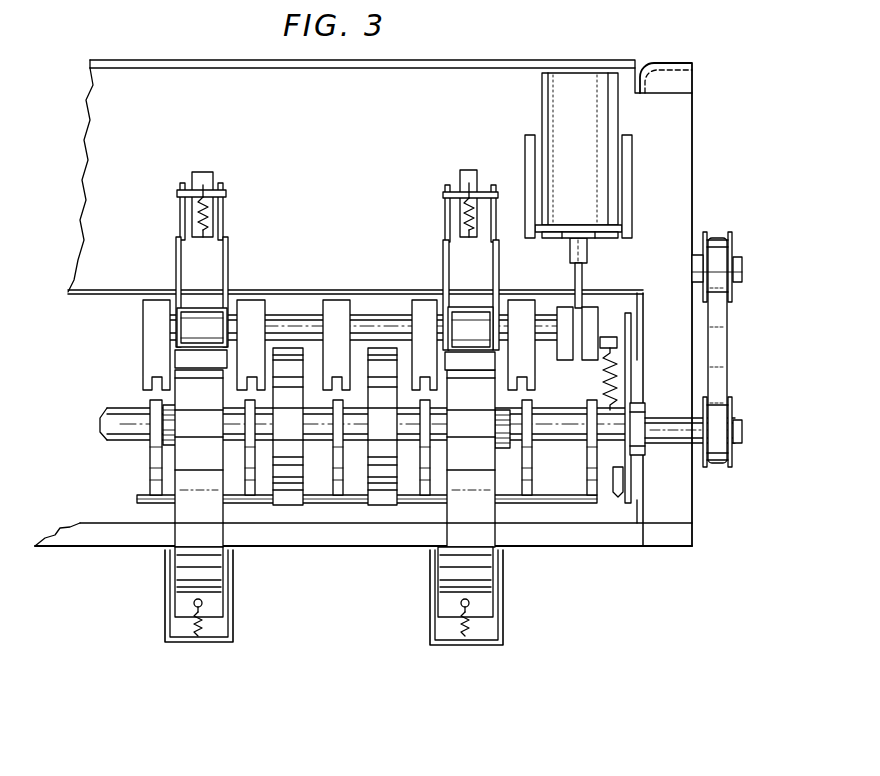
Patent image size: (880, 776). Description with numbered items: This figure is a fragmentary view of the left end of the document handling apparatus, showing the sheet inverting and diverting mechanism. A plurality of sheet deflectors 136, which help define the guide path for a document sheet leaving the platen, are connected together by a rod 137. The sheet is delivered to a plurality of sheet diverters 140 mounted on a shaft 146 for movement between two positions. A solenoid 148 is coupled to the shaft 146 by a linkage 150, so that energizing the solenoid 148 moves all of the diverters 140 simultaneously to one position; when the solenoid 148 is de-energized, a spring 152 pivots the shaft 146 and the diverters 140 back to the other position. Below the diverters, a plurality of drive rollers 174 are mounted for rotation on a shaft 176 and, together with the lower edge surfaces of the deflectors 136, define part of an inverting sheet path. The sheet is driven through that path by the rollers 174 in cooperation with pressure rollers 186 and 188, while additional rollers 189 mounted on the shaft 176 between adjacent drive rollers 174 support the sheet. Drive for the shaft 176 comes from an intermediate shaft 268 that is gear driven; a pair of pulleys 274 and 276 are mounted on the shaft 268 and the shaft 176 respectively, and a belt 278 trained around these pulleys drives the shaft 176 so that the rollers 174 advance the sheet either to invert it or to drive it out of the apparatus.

The sheet deflectors 136 is at (257, 480).
The rod 137 is at (137, 498).
The sheet diverters 140 is at (253, 313).
The shaft 146 is at (305, 323).
The solenoid 148 is at (552, 90).
The linkage 150 is at (581, 302).
The spring 152 is at (631, 372).
The rollers 174 is at (187, 455).
The shaft 176 is at (676, 433).
The pressure rollers 186 is at (187, 306).
The pressure rollers 188 is at (180, 575).
The rollers 189 is at (302, 480).
The intermediate shaft 268 is at (743, 270).
The pulley 274 is at (730, 244).
The pulley 276 is at (733, 452).
The belt 278 is at (721, 358).